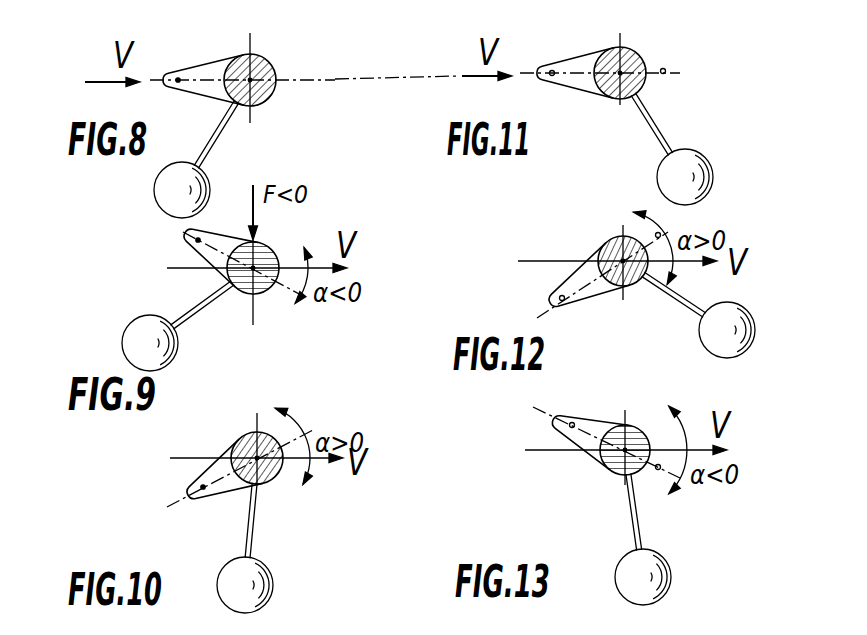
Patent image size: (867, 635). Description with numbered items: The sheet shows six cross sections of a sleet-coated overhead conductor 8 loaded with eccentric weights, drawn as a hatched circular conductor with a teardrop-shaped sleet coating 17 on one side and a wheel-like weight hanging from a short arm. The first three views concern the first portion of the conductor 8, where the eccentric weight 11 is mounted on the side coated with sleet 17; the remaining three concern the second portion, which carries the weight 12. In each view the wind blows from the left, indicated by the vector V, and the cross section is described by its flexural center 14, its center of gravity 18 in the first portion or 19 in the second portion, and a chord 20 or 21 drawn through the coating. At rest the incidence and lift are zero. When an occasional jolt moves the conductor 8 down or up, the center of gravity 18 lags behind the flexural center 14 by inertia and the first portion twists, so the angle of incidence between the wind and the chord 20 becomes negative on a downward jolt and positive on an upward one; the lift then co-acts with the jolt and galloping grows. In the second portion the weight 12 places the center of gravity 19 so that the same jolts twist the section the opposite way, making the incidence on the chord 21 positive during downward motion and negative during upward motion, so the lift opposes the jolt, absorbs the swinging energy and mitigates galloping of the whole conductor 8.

In FIG. 8, the conductor 8 is at (275, 92).
In FIG. 11, the conductor 8 is at (615, 100).
In FIG. 8, the eccentric weight 11 is at (207, 175).
In FIG. 9, the eccentric weight 11 is at (178, 342).
In FIG. 10, the eccentric weight 11 is at (272, 563).
In FIG. 11, the weight 12 is at (698, 153).
In FIG. 12, the weight 12 is at (699, 328).
In FIG. 13, the weight 12 is at (671, 560).
In FIG. 8, the flexural center 14 is at (258, 56).
In FIG. 9, the flexural center 14 is at (270, 247).
In FIG. 10, the flexural center 14 is at (262, 428).
In FIG. 11, the flexural center 14 is at (633, 47).
In FIG. 12, the flexural center 14 is at (613, 243).
In FIG. 13, the flexural center 14 is at (640, 424).
In FIG. 8, the sleet coating 17 is at (216, 55).
In FIG. 9, the sleet coating 17 is at (196, 254).
In FIG. 10, the sleet coating 17 is at (217, 450).
In FIG. 11, the sleet coating 17 is at (578, 52).
In FIG. 12, the sleet coating 17 is at (572, 265).
In FIG. 13, the sleet coating 17 is at (578, 408).
In FIG. 8, the center of gravity 18 is at (178, 78).
In FIG. 9, the center of gravity 18 is at (200, 240).
In FIG. 10, the center of gravity 18 is at (202, 486).
In FIG. 11, the center of gravity 19 is at (663, 66).
In FIG. 12, the center of gravity 19 is at (656, 232).
In FIG. 13, the center of gravity 19 is at (657, 471).
In FIG. 9, the chord 20 is at (220, 268).
In FIG. 10, the chord 20 is at (225, 478).
In FIG. 12, the chord 21 is at (643, 238).
In FIG. 13, the chord 21 is at (597, 436).